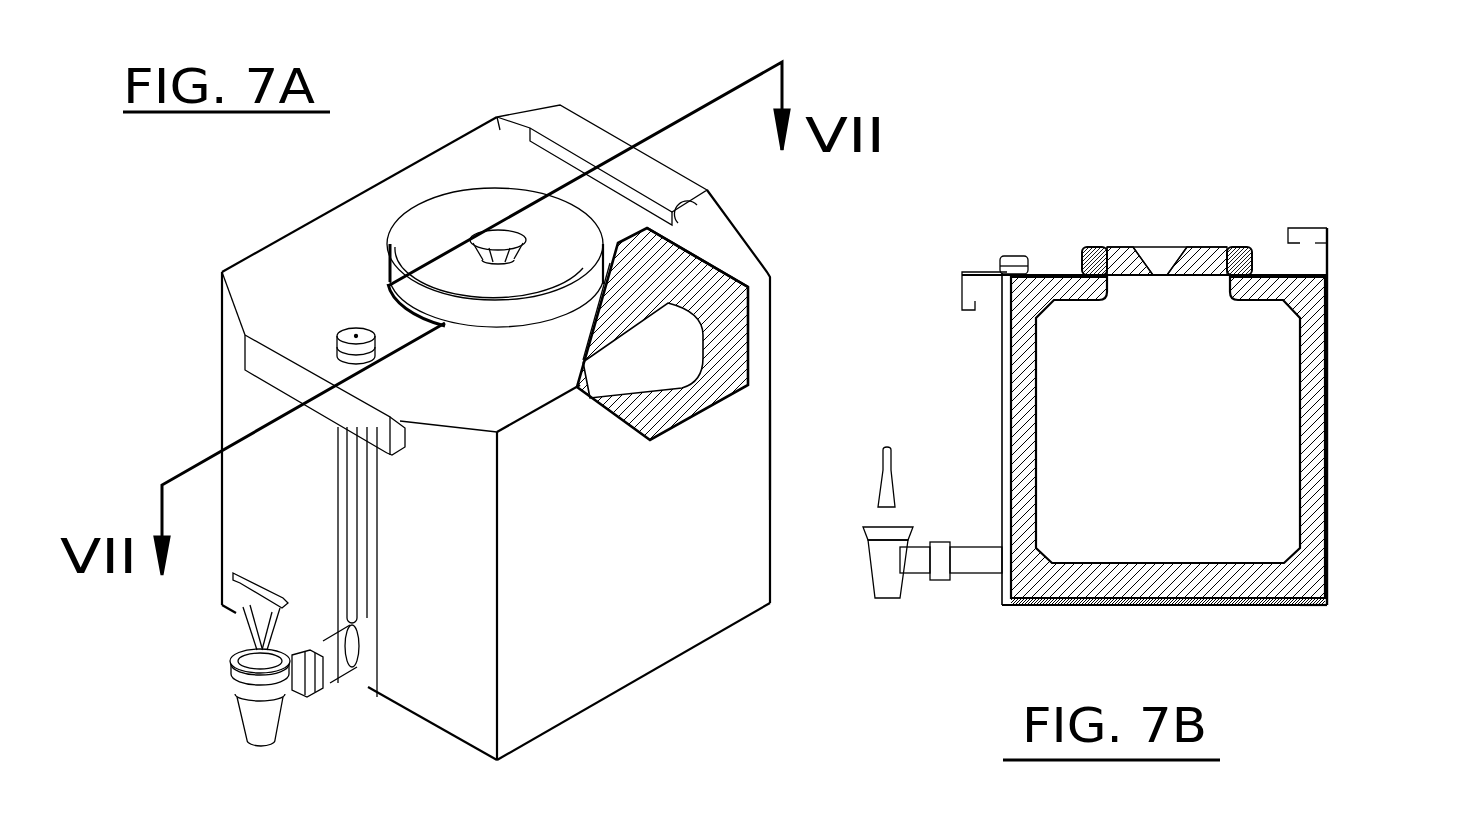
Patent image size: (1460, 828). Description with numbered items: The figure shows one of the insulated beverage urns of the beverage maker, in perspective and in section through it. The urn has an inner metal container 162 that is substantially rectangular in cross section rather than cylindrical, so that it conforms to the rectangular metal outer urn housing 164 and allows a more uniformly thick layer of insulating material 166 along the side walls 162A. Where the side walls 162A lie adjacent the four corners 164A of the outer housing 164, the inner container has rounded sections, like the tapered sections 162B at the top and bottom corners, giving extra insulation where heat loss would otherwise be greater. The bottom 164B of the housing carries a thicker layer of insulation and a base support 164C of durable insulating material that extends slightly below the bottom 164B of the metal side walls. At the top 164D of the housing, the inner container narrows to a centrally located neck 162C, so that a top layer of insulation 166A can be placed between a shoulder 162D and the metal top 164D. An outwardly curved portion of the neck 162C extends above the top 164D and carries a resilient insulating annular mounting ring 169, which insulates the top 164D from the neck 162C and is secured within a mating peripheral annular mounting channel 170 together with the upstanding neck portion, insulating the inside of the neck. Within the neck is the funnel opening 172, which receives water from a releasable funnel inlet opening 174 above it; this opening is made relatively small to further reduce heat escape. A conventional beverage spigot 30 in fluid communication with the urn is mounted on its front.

In FIG. 7A, the beverage spigot 30 is at (233, 670).
In FIG. 7A, the inner metal container 162 is at (635, 302).
In FIG. 7B, the inner metal container 162 is at (1243, 422).
In FIG. 7B, the side walls 162A is at (1030, 378).
In FIG. 7B, the tapered sections 162B is at (1327, 288).
In FIG. 7A, the neck 162C is at (700, 343).
In FIG. 7B, the neck 162C is at (1162, 245).
In FIG. 7B, the shoulder 162D is at (1040, 278).
In FIG. 7A, the outer urn housing 164 is at (603, 632).
In FIG. 7B, the outer urn housing 164 is at (1327, 500).
In FIG. 7A, the corners 164A is at (777, 457).
In FIG. 7B, the bottom 164B is at (1318, 607).
In FIG. 7B, the base support 164C is at (1125, 603).
In FIG. 7B, the top 164D is at (1077, 277).
In FIG. 7A, the insulating material 166 is at (737, 325).
In FIG. 7B, the insulating material 166 is at (1322, 362).
In FIG. 7B, the top layer of insulation 166A is at (1265, 274).
In FIG. 7B, the mounting ring 169 is at (1222, 268).
In FIG. 7B, the mounting channel 170 is at (1117, 247).
In FIG. 7B, the funnel opening 172 is at (1168, 260).
In FIG. 7A, the funnel inlet opening 174 is at (510, 243).
In FIG. 7B, the funnel inlet opening 174 is at (1165, 247).